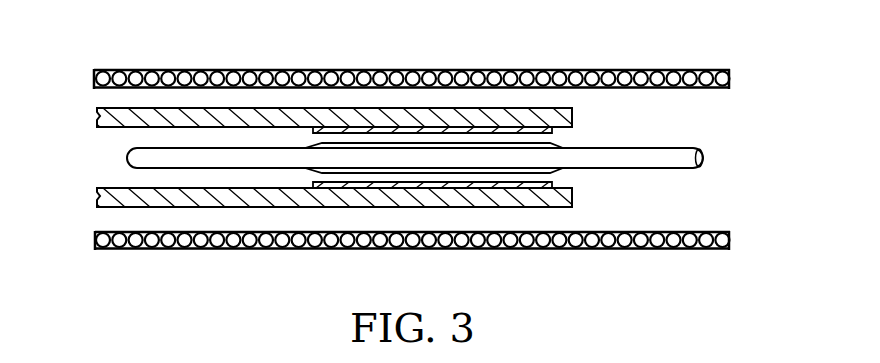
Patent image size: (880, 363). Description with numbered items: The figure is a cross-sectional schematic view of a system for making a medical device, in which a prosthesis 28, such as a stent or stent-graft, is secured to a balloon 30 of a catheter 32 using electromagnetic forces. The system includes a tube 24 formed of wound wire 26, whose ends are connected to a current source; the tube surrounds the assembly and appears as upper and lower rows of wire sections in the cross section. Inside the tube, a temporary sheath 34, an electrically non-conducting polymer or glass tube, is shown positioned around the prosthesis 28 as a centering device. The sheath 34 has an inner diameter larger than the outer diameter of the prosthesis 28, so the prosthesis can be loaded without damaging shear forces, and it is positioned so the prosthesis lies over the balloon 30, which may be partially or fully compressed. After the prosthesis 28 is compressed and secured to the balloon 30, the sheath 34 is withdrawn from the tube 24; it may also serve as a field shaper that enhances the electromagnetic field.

The tube 24 is at (120, 249).
The wound wire 26 is at (691, 70).
The prosthesis 28 is at (552, 185).
The balloon 30 is at (552, 131).
The catheter 32 is at (703, 155).
The temporary sheath 34 is at (97, 200).